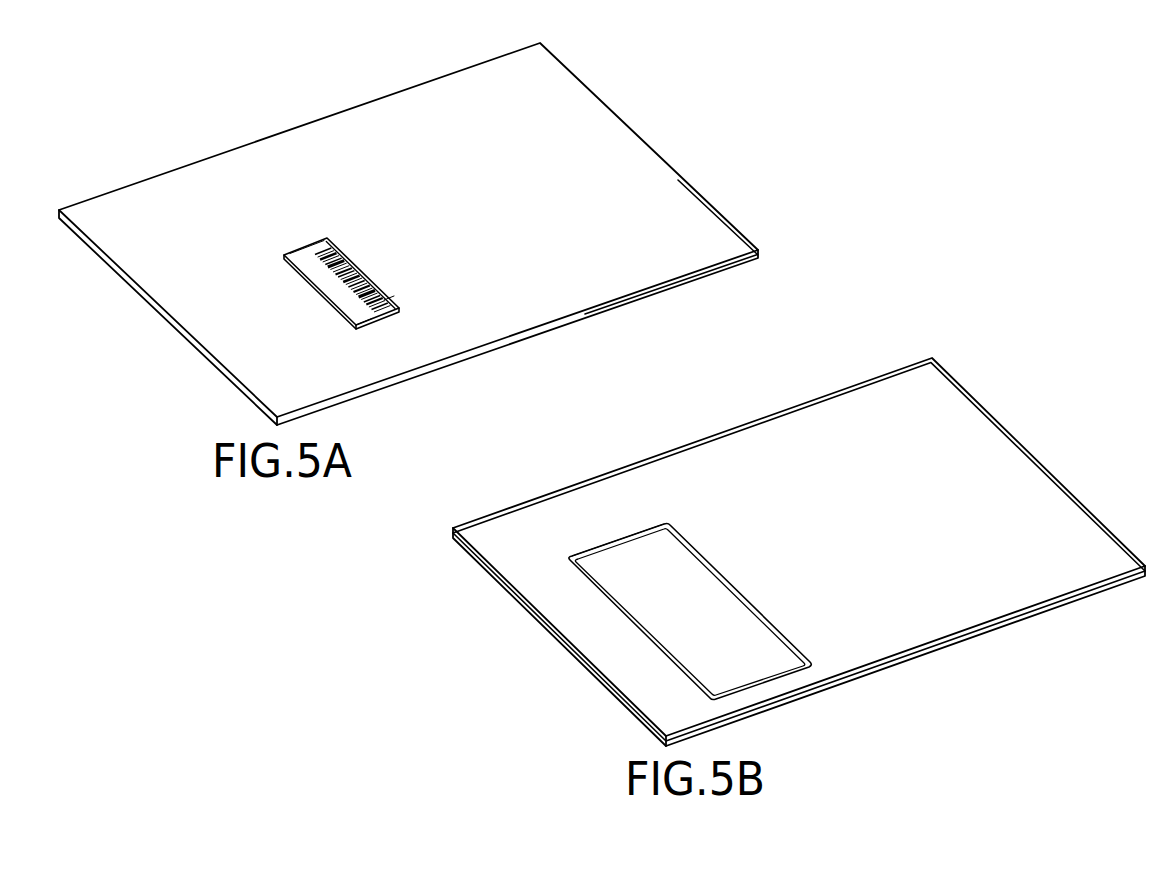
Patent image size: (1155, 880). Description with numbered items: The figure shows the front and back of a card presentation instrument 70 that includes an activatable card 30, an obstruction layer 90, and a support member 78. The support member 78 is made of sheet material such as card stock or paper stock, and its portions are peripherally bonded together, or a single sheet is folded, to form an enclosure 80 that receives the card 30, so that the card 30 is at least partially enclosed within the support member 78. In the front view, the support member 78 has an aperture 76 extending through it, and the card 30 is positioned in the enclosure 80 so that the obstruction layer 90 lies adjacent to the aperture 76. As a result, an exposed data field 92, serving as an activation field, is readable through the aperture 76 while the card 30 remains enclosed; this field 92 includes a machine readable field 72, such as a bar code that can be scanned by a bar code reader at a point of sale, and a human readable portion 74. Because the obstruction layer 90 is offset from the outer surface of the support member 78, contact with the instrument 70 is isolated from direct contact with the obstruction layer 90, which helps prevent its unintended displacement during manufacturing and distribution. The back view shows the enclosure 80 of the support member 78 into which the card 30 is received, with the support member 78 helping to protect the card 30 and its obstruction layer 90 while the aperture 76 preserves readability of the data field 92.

In FIG. 5A, the card presentation instrument 70 is at (257, 101).
In FIG. 5B, the card presentation instrument 70 is at (653, 417).
In FIG. 5A, the machine readable field 72 is at (332, 277).
In FIG. 5A, the human readable portion 74 is at (293, 250).
In FIG. 5A, the aperture 76 is at (366, 327).
In FIG. 5A, the support member 78 is at (713, 227).
In FIG. 5B, the support member 78 is at (1057, 603).
In FIG. 5B, the enclosure 80 is at (584, 548).
In FIG. 5A, the obstruction layer 90 is at (340, 246).
In FIG. 5A, the exposed data field 92 is at (382, 291).
In FIG. 5B, the activatable card 30 is at (686, 599).